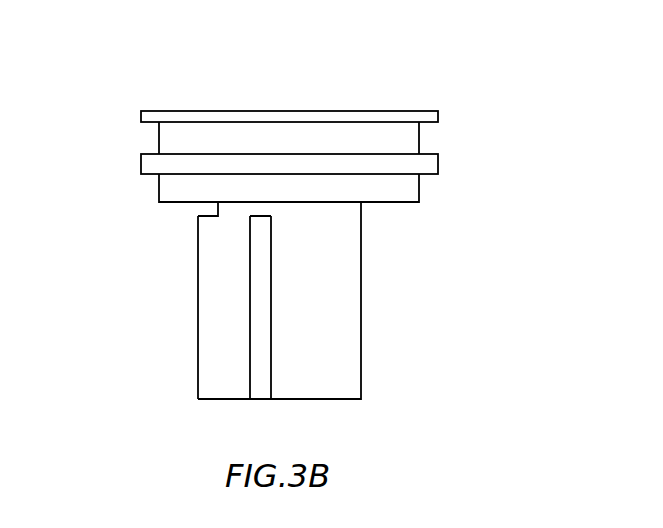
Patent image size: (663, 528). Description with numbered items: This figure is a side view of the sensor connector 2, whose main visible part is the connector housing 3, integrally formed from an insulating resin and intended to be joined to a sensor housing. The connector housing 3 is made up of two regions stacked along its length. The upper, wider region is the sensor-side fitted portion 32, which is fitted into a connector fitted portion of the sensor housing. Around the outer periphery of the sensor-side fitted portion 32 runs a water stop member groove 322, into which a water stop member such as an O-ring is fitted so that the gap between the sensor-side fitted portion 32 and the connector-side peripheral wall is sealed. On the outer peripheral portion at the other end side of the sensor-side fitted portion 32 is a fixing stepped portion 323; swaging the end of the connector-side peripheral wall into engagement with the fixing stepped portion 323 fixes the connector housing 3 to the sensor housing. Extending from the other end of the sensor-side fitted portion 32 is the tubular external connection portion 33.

The sensor connector 2 is at (168, 368).
The connector housing 3 is at (292, 242).
The sensor-side fitted portion 32 is at (292, 138).
The water stop member groove 322 is at (360, 135).
The fixing stepped portion 323 is at (428, 176).
The external connection portion 33 is at (259, 300).